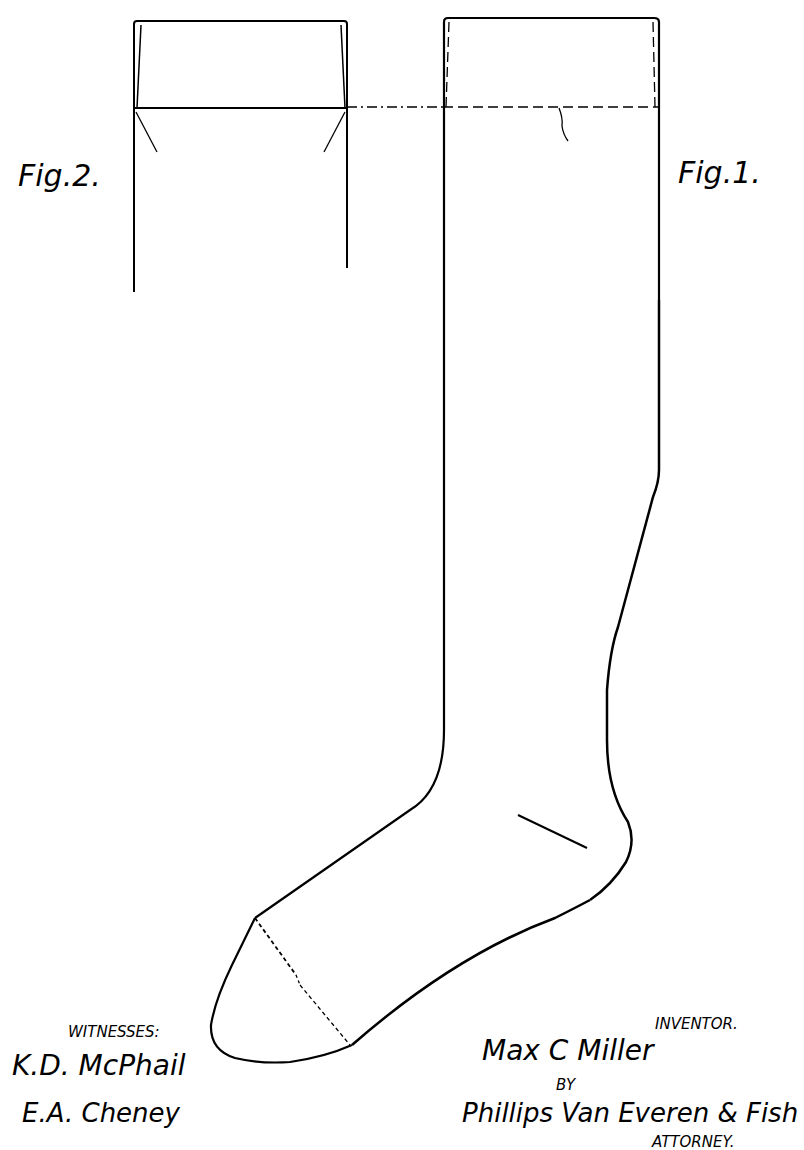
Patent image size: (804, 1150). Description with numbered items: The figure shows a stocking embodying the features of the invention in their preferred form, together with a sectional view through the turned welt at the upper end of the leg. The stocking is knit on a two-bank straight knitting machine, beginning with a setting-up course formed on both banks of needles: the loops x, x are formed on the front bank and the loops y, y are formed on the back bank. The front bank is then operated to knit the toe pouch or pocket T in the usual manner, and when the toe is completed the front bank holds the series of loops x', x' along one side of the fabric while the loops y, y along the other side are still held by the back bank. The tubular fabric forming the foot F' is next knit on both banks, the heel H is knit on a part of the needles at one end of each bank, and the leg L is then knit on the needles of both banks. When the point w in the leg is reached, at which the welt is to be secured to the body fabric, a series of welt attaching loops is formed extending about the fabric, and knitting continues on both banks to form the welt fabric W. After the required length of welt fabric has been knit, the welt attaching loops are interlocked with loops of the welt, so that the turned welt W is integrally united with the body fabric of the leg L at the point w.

In FIG. 2, the welt fabric W is at (341, 54).
In FIG. 2, the welt securing point w is at (348, 110).
In FIG. 1, the leg L is at (648, 364).
In FIG. 1, the heel H is at (600, 848).
In FIG. 1, the foot F' is at (471, 972).
In FIG. 1, the toe pouch or pocket T is at (292, 1052).
In FIG. 1, the setting-up course loops on the front bank x is at (265, 955).
In FIG. 1, the setting-up course loops on the back bank y is at (280, 941).
In FIG. 1, the loops held by the front bank after the toe x' is at (335, 1019).